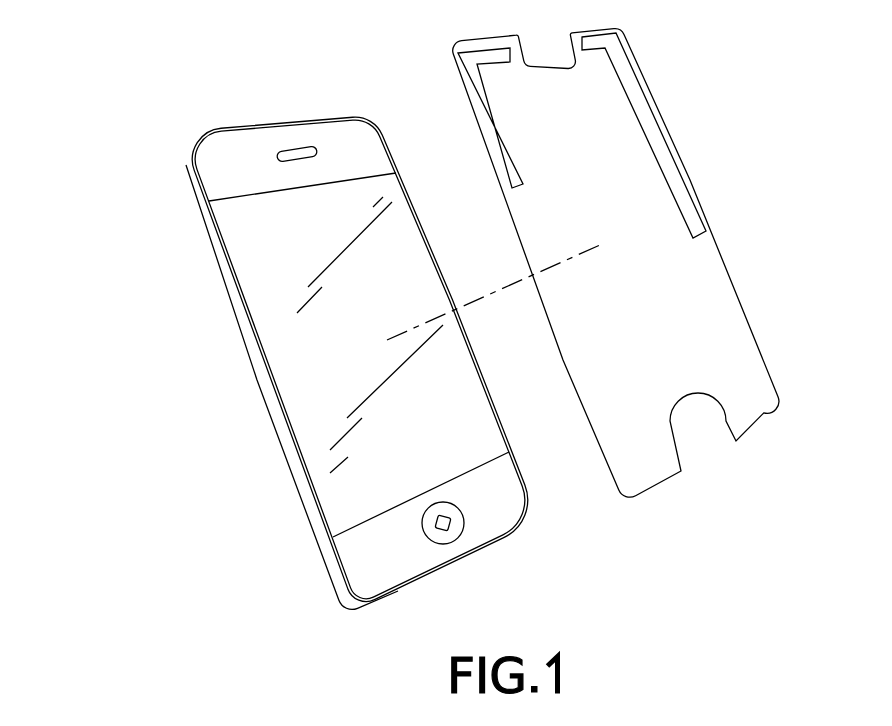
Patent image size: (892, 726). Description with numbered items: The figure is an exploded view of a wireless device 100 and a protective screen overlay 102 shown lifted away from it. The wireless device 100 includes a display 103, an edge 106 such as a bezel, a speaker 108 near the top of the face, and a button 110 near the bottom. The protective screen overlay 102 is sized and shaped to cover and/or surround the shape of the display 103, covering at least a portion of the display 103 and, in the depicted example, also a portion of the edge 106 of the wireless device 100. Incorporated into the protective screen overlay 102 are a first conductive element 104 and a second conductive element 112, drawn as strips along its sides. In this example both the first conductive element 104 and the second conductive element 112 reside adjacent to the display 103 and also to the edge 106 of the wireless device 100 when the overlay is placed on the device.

The wireless device 100 is at (290, 319).
The protective screen overlay 102 is at (602, 263).
The display 103 is at (293, 373).
The first conductive element 104 is at (650, 113).
The edge 106 is at (217, 171).
The speaker 108 is at (292, 152).
The button 110 is at (367, 550).
The second conductive element 112 is at (483, 117).